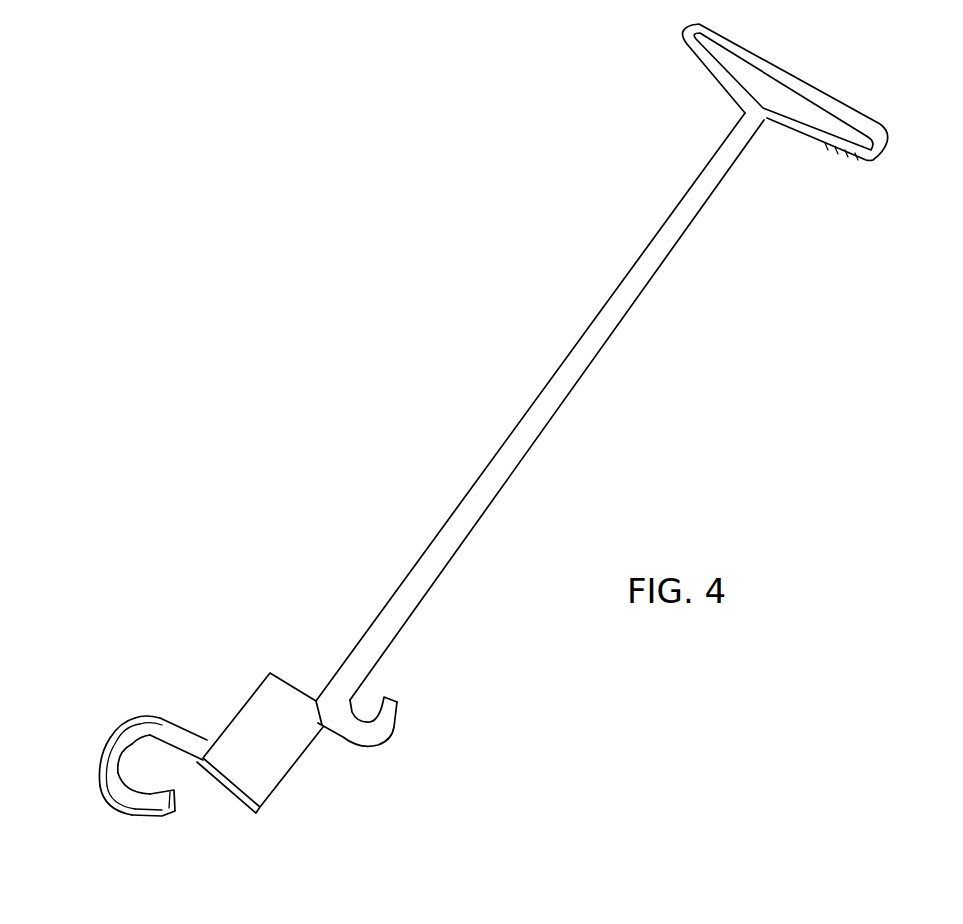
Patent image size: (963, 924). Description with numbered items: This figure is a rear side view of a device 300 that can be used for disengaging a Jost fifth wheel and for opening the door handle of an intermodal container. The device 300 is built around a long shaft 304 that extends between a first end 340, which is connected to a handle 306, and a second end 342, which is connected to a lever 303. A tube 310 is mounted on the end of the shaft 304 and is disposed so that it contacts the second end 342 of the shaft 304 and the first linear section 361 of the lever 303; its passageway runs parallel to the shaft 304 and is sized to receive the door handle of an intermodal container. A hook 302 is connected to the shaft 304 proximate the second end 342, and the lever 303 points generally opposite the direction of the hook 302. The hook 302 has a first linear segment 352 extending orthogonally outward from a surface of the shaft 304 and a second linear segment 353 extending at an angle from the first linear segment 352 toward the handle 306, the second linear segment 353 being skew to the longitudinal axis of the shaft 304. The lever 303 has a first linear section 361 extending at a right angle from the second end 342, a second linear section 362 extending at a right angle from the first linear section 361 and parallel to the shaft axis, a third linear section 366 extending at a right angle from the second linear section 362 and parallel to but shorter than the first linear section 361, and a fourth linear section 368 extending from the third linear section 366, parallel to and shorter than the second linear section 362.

The device 300 is at (283, 333).
The hook 302 is at (385, 723).
The lever 303 is at (88, 727).
The shaft 304 is at (501, 480).
The handle 306 is at (720, 78).
The tube 310 is at (261, 707).
The first end 340 is at (777, 171).
The second end 342 is at (196, 686).
The first linear segment 352 is at (348, 730).
The second linear segment 353 is at (384, 697).
The first linear section 361 is at (178, 738).
The second linear section 362 is at (118, 747).
The third linear section 366 is at (118, 800).
The fourth linear section 368 is at (168, 803).